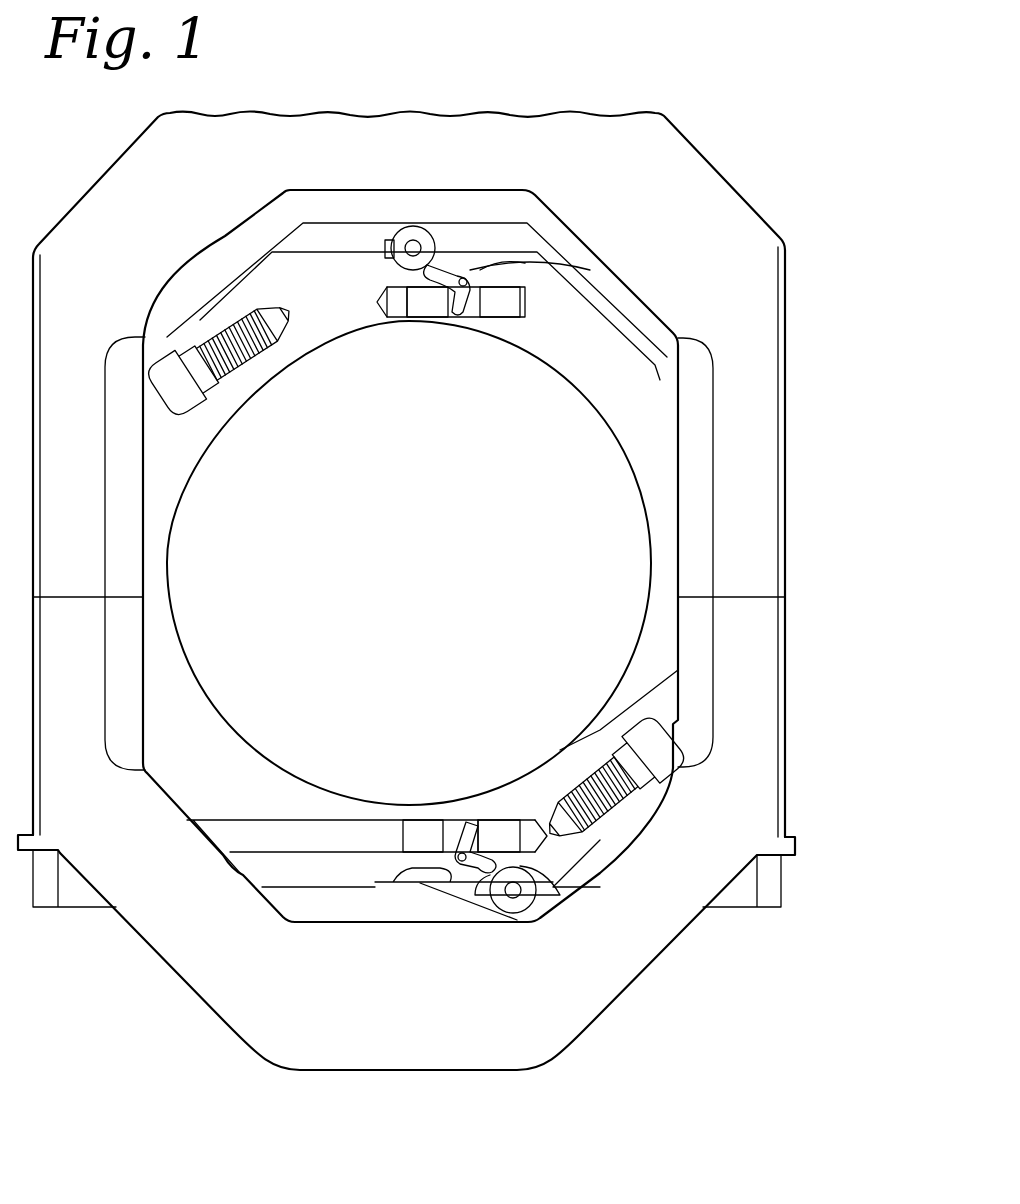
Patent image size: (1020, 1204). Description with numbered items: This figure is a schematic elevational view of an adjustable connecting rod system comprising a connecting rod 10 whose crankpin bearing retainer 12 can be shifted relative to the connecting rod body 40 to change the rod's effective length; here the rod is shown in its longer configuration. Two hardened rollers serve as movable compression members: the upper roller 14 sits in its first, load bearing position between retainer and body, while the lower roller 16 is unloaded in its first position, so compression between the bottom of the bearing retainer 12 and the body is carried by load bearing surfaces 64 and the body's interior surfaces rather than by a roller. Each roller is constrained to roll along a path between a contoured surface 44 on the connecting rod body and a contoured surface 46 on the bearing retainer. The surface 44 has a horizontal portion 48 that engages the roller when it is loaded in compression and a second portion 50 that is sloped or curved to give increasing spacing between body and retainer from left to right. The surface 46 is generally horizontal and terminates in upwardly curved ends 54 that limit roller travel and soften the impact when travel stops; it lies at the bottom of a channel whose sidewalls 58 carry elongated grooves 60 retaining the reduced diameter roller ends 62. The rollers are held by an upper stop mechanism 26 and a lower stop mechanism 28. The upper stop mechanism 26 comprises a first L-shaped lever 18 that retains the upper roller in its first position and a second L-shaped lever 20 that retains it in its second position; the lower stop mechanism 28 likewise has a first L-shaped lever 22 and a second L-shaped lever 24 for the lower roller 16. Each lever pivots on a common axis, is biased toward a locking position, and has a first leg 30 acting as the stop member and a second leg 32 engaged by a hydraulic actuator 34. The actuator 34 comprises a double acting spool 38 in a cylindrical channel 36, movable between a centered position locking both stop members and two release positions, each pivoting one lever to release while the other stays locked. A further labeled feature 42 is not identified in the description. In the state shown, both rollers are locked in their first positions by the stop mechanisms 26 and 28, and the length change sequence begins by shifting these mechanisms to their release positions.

The connecting rod 10 is at (192, 985).
The bearing retainer 12 is at (612, 399).
The roller 14 is at (400, 240).
The lower compression member 16 is at (513, 905).
The first L-shaped lever 18 is at (458, 300).
The second L-shaped lever 20 is at (545, 252).
The first L-shaped lever 22 is at (470, 820).
The second L-shaped lever 24 is at (433, 870).
The upper stop mechanism 26 is at (638, 246).
The lower stop mechanism 28 is at (563, 886).
The first leg 30 is at (503, 250).
The second leg 32 is at (474, 310).
The hydraulic actuator 34 is at (365, 323).
The cylindrical channel 36 is at (578, 316).
The spool 38 is at (420, 306).
The connecting rod body 40 is at (698, 176).
The wedge tip 42 is at (378, 301).
The contoured surface 44 is at (471, 200).
The contoured surface 46 is at (530, 274).
The horizontal portion 48 is at (412, 240).
The second portion 50 is at (522, 192).
The upwardly curved ends 54 is at (385, 252).
The sidewalls 58 is at (443, 238).
The elongated grooves 60 is at (520, 270).
The roller ends 62 is at (393, 240).
The load bearing surfaces 64 is at (470, 240).